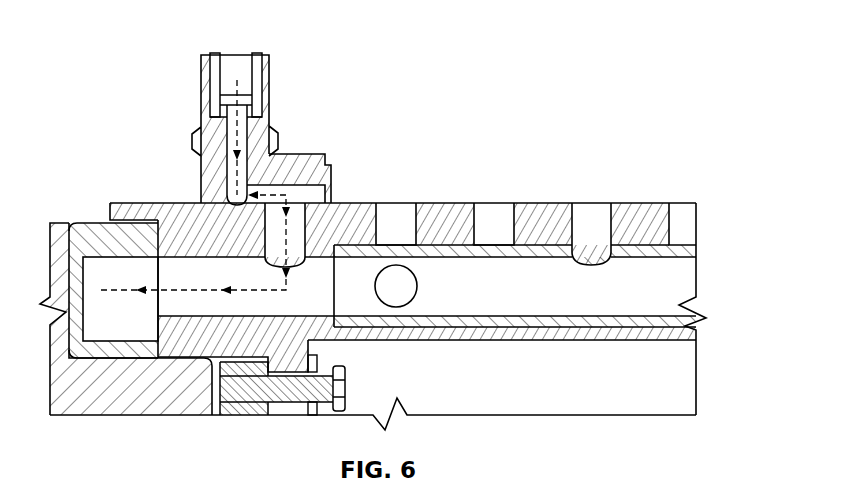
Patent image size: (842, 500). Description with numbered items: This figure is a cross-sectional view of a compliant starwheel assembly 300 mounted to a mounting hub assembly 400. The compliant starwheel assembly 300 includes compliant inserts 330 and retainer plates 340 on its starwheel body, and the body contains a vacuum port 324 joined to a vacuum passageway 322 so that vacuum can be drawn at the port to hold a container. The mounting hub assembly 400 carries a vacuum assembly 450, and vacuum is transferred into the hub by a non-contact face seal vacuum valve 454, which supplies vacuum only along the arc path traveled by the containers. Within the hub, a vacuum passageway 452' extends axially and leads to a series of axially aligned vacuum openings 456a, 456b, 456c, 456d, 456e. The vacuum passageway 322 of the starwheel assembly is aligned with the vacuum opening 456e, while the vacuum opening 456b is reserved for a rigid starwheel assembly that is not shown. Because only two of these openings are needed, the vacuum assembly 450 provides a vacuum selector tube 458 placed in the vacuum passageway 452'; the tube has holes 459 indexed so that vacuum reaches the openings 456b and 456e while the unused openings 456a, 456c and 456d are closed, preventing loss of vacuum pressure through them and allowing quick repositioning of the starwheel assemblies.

The compliant starwheel assembly 300 is at (308, 163).
The vacuum passageway 322 is at (283, 193).
The vacuum port 324 is at (233, 55).
The compliant insert 330 is at (213, 60).
The retainer plate 340 is at (203, 110).
The mounting hub assembly 400 is at (435, 220).
The vacuum assembly 450 is at (650, 250).
The vacuum passageway 452' is at (413, 277).
The face seal vacuum valve 454 is at (112, 350).
The vacuum opening 456a is at (683, 215).
The vacuum opening 456b is at (588, 215).
The vacuum opening 456c is at (495, 220).
The vacuum opening 456d is at (395, 220).
The vacuum opening 456e is at (296, 217).
The vacuum selector tube 458 is at (678, 280).
The hole 459 is at (402, 290).